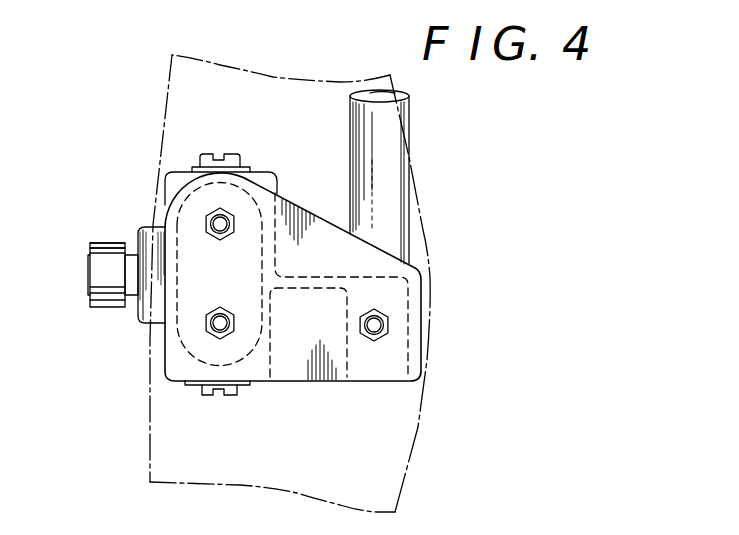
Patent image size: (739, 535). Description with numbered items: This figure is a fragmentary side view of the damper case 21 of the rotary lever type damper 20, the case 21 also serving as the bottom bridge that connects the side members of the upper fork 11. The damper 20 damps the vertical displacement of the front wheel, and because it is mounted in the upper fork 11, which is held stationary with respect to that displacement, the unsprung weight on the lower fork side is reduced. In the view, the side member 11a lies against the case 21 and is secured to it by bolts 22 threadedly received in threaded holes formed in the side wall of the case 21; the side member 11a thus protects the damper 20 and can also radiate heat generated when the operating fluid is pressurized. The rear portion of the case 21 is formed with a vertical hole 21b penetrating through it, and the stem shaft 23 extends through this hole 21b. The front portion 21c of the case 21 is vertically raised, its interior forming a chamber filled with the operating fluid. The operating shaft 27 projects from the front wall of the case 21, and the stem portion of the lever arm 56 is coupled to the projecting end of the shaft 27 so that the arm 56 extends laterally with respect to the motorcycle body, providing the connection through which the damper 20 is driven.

The upper fork 11 is at (150, 422).
The side member 11a is at (418, 431).
The rotary lever type damper 20 is at (166, 358).
The case 21 is at (307, 380).
The vertical hole 21b is at (400, 305).
The vertically raised front portion 21c is at (177, 172).
The bolt 22 is at (205, 217).
The stem shaft 23 is at (408, 124).
The operating shaft 27 is at (135, 277).
The lever arm 56 is at (103, 250).